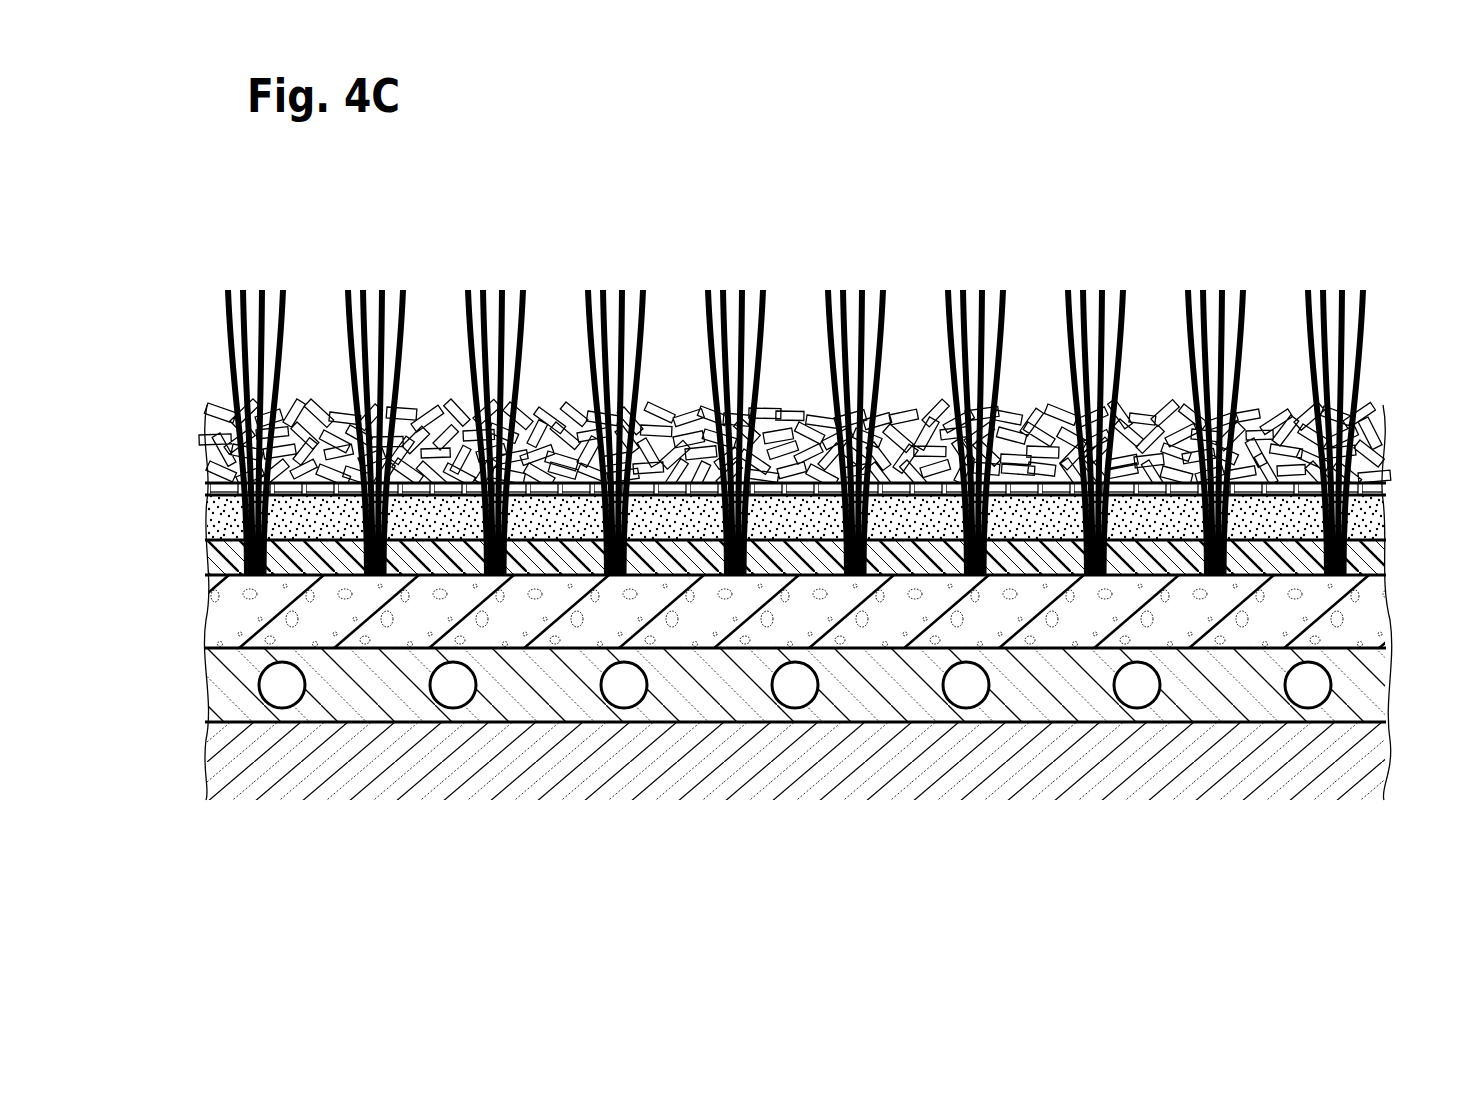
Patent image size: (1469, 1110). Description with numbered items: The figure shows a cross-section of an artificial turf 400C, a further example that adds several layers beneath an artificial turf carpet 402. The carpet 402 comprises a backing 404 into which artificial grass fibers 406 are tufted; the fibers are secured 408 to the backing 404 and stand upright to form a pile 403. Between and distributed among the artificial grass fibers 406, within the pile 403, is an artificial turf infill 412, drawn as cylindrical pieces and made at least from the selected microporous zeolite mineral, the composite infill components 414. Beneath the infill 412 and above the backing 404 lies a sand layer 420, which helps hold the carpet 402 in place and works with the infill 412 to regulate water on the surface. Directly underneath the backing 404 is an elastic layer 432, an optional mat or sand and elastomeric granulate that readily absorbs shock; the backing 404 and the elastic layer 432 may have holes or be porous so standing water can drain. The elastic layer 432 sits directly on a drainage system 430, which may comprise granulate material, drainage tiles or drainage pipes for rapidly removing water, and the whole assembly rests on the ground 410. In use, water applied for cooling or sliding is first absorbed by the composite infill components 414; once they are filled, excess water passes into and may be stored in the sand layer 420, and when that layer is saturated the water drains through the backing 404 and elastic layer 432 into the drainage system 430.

The artificial turf 400C is at (1043, 249).
The artificial turf carpet 402 is at (138, 288).
The pile 403 is at (193, 288).
The backing 404 is at (1383, 554).
The artificial grass fibers 406 is at (455, 278).
The securing of the fibers to the backing 408 is at (491, 590).
The ground 410 is at (1363, 773).
The artificial turf infill 412 is at (661, 385).
The composite infill components 414 is at (787, 418).
The sand layer 420 is at (1385, 519).
The drainage system 430 is at (1382, 677).
The elastic layer 432 is at (1385, 633).